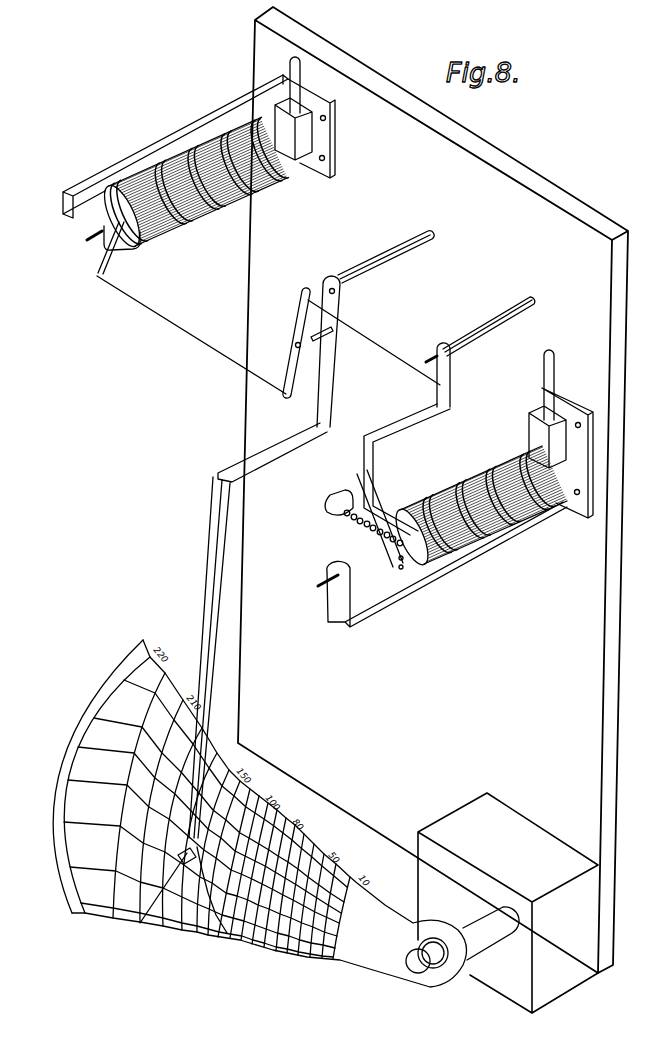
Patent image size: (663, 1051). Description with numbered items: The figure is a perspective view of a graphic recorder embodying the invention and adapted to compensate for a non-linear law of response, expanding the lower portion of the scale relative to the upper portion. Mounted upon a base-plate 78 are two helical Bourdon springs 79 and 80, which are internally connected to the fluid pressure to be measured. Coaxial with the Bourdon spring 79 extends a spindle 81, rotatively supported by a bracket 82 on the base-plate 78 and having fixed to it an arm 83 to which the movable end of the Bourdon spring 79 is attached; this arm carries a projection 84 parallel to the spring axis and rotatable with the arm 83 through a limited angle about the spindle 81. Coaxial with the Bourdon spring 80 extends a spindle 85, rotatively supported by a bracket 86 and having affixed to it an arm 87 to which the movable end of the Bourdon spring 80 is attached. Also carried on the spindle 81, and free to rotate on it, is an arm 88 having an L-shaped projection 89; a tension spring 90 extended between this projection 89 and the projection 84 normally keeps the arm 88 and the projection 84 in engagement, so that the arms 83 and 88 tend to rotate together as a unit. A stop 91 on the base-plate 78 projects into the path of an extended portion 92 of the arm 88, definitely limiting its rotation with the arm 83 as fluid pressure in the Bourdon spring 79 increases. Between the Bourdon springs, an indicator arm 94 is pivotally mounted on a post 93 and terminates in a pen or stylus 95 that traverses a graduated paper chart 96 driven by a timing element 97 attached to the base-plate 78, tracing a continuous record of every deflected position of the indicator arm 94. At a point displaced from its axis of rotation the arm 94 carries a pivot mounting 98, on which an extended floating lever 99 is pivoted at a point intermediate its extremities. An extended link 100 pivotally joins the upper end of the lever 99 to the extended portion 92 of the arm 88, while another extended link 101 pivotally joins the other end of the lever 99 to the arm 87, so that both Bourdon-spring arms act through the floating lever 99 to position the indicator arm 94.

The base-plate 78 is at (533, 177).
The helical Bourdon spring 79 is at (463, 465).
The helical Bourdon spring 80 is at (204, 221).
The spindle 81 is at (322, 583).
The bracket 82 is at (332, 612).
The arm 83 is at (386, 567).
The projection 84 is at (333, 500).
The spindle 85 is at (93, 241).
The bracket 86 is at (73, 213).
The arm 87 is at (104, 266).
The arm 88 is at (375, 467).
The L-shaped projection 89 is at (420, 553).
The tension spring 90 is at (348, 518).
The stop 91 is at (473, 328).
The extended portion 92 is at (444, 392).
The post 93 is at (381, 272).
The indicator arm 94 is at (327, 407).
The pen or stylus 95 is at (140, 924).
The paper chart 96 is at (203, 937).
The timing element 97 is at (515, 822).
The pivot mounting 98 is at (322, 340).
The floating lever 99 is at (292, 314).
The link 100 is at (393, 354).
The link 101 is at (191, 335).